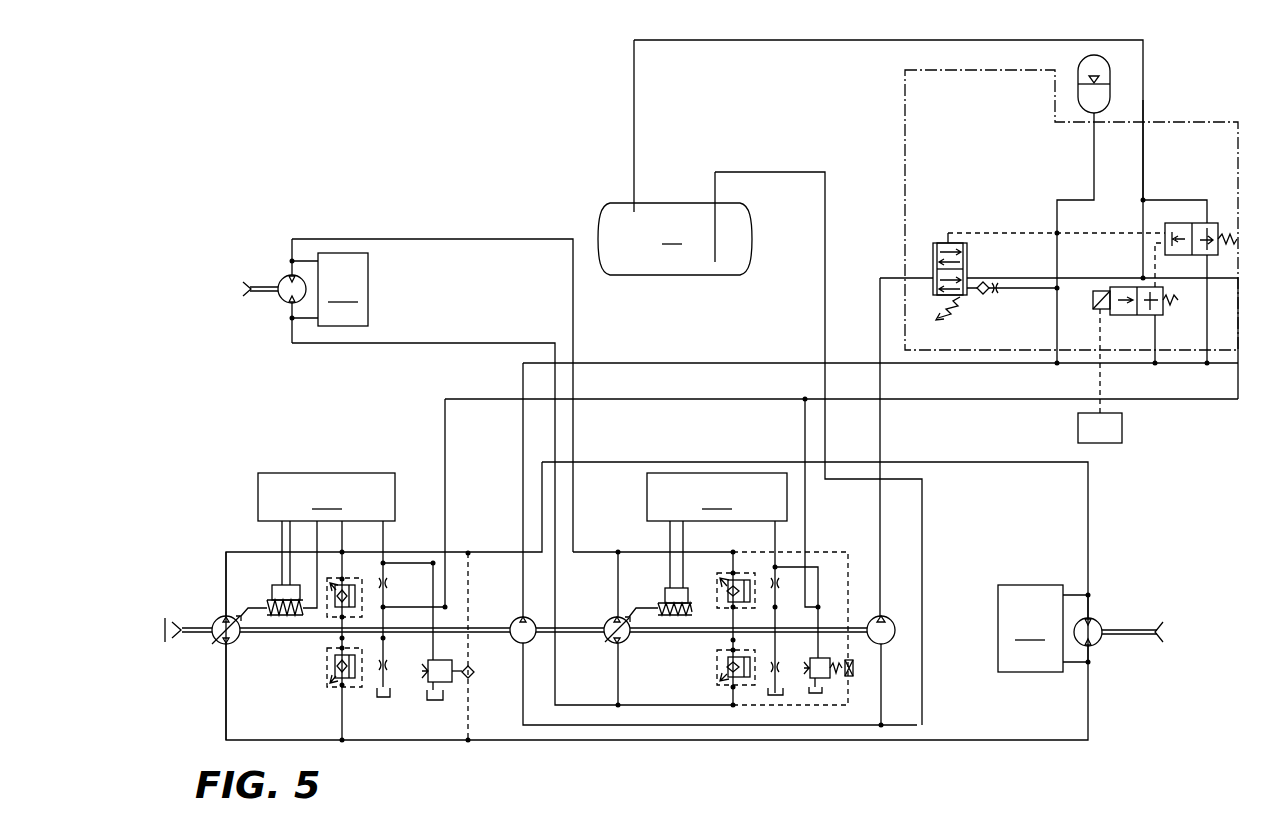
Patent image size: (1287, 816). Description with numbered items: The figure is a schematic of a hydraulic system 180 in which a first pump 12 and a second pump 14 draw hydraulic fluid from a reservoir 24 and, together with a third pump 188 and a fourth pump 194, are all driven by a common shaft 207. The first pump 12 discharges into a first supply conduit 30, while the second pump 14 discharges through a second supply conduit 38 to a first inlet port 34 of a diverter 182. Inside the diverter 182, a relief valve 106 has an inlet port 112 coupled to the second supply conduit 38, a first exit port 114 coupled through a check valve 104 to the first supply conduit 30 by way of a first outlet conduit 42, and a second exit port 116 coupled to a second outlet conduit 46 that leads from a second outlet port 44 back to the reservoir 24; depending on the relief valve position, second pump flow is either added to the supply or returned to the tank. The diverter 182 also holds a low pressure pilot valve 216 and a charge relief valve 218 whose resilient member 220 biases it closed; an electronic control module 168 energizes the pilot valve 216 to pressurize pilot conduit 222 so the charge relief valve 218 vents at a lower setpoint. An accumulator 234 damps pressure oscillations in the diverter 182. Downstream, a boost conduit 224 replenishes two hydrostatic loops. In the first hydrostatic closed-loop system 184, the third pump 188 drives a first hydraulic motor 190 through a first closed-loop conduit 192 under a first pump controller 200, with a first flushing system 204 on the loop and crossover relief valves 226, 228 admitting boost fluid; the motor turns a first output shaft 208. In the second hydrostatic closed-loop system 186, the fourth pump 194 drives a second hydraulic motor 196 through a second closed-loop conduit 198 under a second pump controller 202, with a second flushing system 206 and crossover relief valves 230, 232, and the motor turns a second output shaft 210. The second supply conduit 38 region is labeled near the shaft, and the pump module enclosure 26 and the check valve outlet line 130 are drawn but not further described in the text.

The hydraulic system 180 is at (313, 160).
The diverter 182 is at (930, 65).
The second outlet conduit 46 is at (1002, 40).
The accumulator 234 is at (1110, 58).
The second outlet port 44 is at (1143, 112).
The first outlet conduit 42 is at (1096, 172).
The resilient member 220 is at (1237, 235).
The charge relief valve 218 is at (1208, 222).
The second exit port 116 is at (966, 242).
The low pressure pilot valve 216 is at (960, 242).
The outlet line 130 is at (998, 283).
The relief valve 106 is at (922, 252).
The first inlet port 34 is at (925, 277).
The inlet port 112 is at (932, 290).
The pilot conduit 222 is at (1152, 262).
The check valve 104 is at (996, 296).
The first exit port 114 is at (976, 300).
The electronic control module 168 is at (1100, 376).
The reservoir 24 is at (760, 448).
The first supply conduit 30 is at (762, 362).
The second supply conduit 38 is at (882, 430).
The first hydrostatic closed-loop system 184 is at (426, 238).
The first closed-loop conduit 192 is at (500, 238).
The first flushing system 204 is at (343, 289).
The first hydraulic motor 190 is at (287, 304).
The first output shaft 208 is at (248, 293).
The second closed-loop conduit 198 is at (969, 464).
The second hydrostatic closed-loop system 186 is at (1090, 503).
The second flushing system 206 is at (1030, 628).
The second hydraulic motor 196 is at (1100, 616).
The second output shaft 210 is at (1160, 638).
The pump module 26 is at (923, 572).
The second pump 14 is at (896, 652).
The first pump 12 is at (520, 615).
The third pump 188 is at (612, 645).
The fourth pump 194 is at (215, 646).
The common shaft 207 is at (488, 638).
The second pump controller 202 is at (318, 606).
The first pump controller 200 is at (708, 583).
The boost conduit 224 is at (470, 400).
The crossover relief valve 228 is at (385, 610).
The crossover relief valve 226 is at (340, 681).
The crossover relief valve 230 is at (728, 684).
The crossover relief valve 232 is at (751, 592).